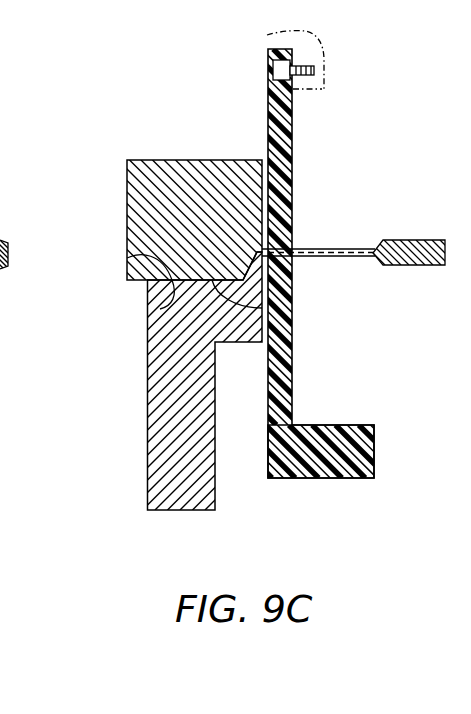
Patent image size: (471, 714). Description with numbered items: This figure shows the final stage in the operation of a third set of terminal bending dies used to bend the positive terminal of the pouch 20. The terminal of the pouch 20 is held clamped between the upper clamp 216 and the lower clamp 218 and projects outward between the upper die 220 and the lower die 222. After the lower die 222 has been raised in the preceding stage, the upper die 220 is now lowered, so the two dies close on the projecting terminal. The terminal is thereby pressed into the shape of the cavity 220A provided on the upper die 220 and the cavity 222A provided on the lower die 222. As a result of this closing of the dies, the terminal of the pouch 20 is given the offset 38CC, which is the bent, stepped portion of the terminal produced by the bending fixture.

The pouch 20 is at (410, 240).
The upper clamp 216 is at (293, 135).
The lower clamp 218 is at (280, 384).
The upper die 220 is at (137, 197).
The cavity 220A is at (150, 307).
The lower die 222 is at (165, 456).
The cavity 222A is at (127, 256).
The offset 38CC is at (215, 307).